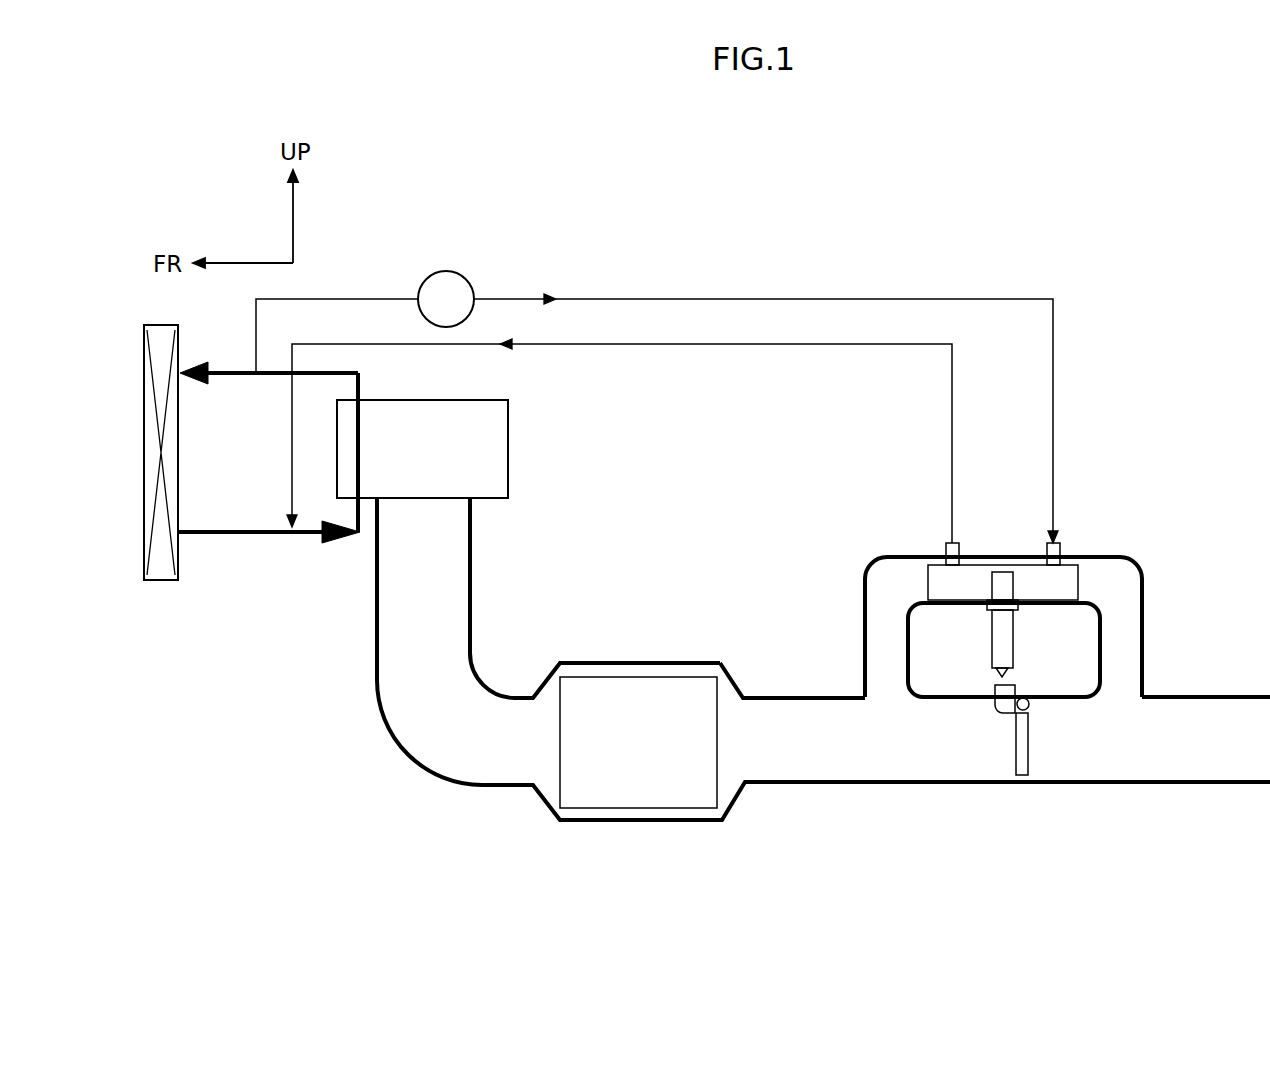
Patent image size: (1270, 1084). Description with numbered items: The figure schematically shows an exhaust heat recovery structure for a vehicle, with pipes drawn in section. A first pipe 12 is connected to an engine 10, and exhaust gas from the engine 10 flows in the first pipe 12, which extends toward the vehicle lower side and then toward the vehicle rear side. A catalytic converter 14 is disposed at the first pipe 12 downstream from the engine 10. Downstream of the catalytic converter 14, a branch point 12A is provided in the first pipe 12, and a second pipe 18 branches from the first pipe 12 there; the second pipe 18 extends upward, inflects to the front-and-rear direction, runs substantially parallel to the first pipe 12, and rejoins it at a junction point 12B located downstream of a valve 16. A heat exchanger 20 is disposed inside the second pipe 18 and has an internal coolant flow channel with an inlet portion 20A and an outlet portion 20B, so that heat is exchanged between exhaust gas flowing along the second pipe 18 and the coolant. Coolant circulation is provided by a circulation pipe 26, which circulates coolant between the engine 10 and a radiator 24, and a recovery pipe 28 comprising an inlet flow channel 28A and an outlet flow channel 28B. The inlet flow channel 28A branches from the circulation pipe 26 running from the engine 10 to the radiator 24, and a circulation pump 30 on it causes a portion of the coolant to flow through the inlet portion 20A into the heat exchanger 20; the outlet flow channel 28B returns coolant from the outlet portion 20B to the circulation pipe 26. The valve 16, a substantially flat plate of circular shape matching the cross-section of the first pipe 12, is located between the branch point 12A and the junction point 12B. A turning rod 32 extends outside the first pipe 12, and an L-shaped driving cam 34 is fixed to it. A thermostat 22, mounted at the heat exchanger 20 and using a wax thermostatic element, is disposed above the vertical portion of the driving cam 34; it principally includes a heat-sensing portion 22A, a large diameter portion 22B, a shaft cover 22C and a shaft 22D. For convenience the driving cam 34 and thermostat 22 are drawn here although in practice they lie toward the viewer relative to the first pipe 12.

The engine 10 is at (510, 450).
The first pipe 12 is at (478, 571).
The branch point 12A is at (858, 693).
The junction point 12B is at (1158, 692).
The catalytic converter 14 is at (633, 677).
The valve 16 is at (1030, 745).
The second pipe 18 is at (895, 555).
The heat exchanger 20 is at (1086, 585).
The inlet portion 20A is at (1066, 540).
The outlet portion 20B is at (945, 538).
The thermostat 22 is at (1068, 574).
The heat-sensing portion 22A is at (1007, 563).
The large diameter portion 22B is at (990, 605).
The shaft cover 22C is at (1013, 640).
The shaft 22D is at (998, 668).
The radiator 24 is at (153, 582).
The circulation pipe 26 is at (243, 535).
The recovery pipe 28 is at (657, 360).
The inlet flow channel 28A is at (913, 296).
The outlet flow channel 28B is at (763, 344).
The circulation pump 30 is at (445, 272).
The turning rod 32 is at (1030, 703).
The driving cam 34 is at (988, 705).